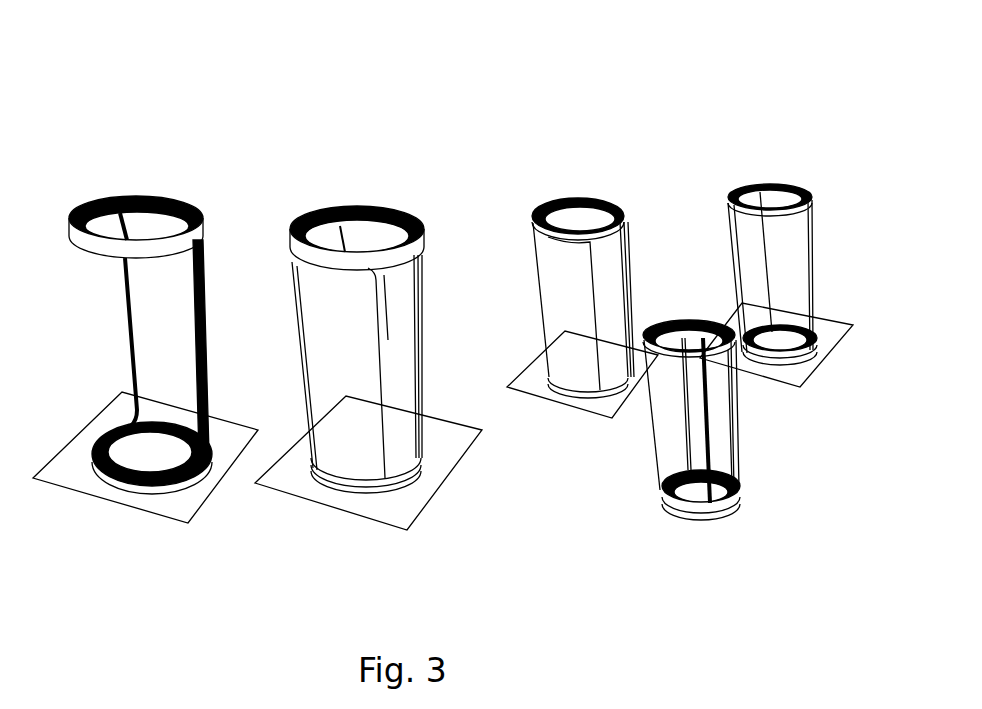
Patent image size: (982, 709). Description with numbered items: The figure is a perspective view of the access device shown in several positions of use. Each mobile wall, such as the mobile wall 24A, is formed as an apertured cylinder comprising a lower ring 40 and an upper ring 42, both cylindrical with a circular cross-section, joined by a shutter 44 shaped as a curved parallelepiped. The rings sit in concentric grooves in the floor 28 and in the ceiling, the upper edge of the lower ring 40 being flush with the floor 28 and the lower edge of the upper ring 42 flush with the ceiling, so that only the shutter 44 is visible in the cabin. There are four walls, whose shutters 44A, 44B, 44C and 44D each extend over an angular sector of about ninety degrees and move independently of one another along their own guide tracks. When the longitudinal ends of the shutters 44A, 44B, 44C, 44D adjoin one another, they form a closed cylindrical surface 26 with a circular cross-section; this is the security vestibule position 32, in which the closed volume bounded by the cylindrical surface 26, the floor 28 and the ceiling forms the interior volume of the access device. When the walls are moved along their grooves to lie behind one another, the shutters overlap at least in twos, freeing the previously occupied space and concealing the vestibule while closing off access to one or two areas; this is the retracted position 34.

The retracted position 34 is at (128, 148).
The security vestibule position 32 is at (337, 192).
The closed cylindrical surface 26 is at (357, 220).
The shutter 44A is at (383, 232).
The shutter 44B is at (322, 237).
The shutter 44C is at (335, 438).
The shutter 44D is at (403, 440).
The mobile wall 24A is at (150, 398).
The shutter 44 is at (188, 403).
The floor 28 is at (560, 403).
The lower ring 40 is at (683, 493).
The upper ring 42 is at (703, 350).